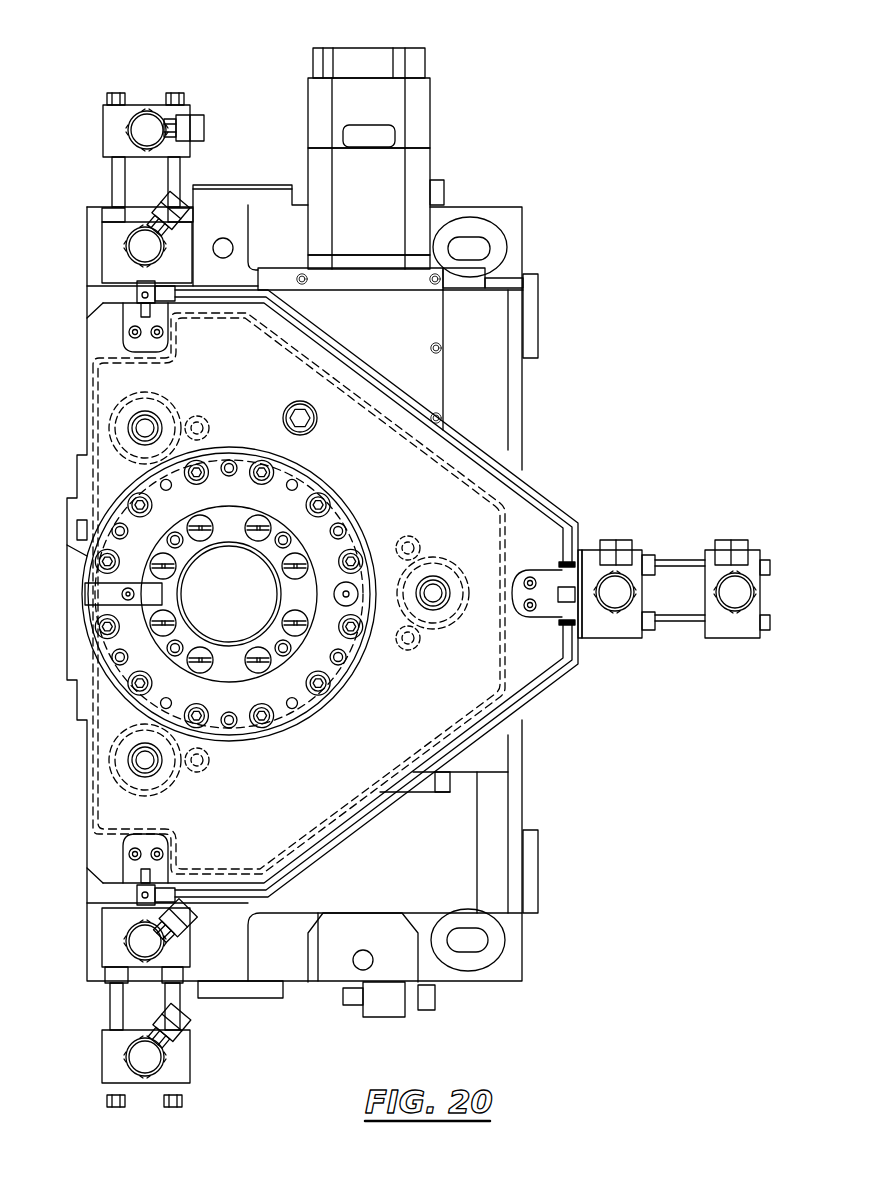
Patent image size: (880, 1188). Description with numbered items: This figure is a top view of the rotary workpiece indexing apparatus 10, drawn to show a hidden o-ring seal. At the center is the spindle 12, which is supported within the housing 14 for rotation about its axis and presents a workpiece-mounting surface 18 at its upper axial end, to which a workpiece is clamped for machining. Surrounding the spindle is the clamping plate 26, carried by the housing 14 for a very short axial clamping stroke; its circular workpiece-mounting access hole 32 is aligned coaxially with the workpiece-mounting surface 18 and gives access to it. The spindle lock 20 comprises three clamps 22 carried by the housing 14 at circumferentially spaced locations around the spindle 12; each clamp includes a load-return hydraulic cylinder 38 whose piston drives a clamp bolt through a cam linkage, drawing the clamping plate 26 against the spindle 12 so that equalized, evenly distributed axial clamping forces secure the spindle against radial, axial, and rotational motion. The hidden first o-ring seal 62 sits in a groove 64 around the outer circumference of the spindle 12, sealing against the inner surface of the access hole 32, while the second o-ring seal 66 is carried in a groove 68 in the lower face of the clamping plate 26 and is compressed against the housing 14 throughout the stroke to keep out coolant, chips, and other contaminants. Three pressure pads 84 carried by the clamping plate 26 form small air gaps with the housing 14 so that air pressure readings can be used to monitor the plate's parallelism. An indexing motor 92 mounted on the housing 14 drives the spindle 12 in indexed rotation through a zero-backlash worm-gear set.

The rotary workpiece indexing apparatus 10 is at (592, 236).
The spindle 12 is at (225, 599).
The housing 14 is at (526, 766).
The workpiece-mounting surface 18 is at (170, 503).
The spindle lock 20 is at (436, 594).
The clamps 22 is at (440, 594).
The clamping plate 26 is at (468, 502).
The workpiece-mounting access hole 32 is at (334, 518).
The hydraulic cylinders 38 is at (143, 102).
The first o-ring seal 62 is at (255, 594).
The groove 64 is at (326, 698).
The second o-ring seal 66 is at (348, 593).
The groove 68 is at (462, 432).
The pressure pads 84 is at (156, 340).
The indexing motor 92 is at (374, 52).